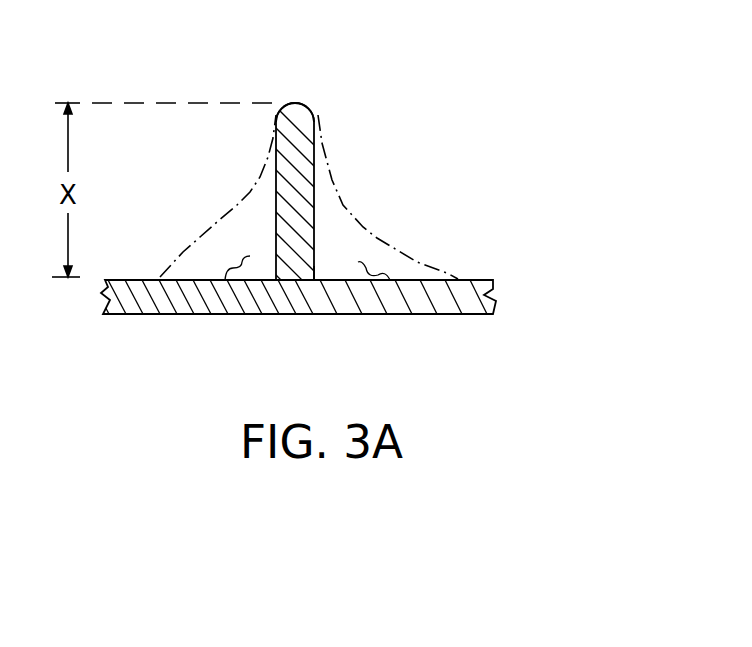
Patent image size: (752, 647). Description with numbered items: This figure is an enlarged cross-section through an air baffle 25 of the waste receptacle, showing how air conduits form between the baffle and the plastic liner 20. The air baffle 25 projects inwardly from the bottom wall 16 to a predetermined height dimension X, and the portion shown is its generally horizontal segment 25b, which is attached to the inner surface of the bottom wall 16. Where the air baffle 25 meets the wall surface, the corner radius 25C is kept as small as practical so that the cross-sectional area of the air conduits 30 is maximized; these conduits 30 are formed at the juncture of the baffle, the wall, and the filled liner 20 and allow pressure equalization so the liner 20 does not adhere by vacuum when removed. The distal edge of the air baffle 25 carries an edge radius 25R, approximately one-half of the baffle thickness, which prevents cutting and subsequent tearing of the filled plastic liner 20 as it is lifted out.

The bottom wall 16 is at (494, 295).
The plastic liner 20 is at (232, 220).
The air baffle 25 is at (265, 62).
The terminal edge radius 25R is at (307, 103).
The horizontal segment 25b is at (313, 198).
The corner radius 25C is at (316, 272).
The air conduit 30 is at (225, 280).